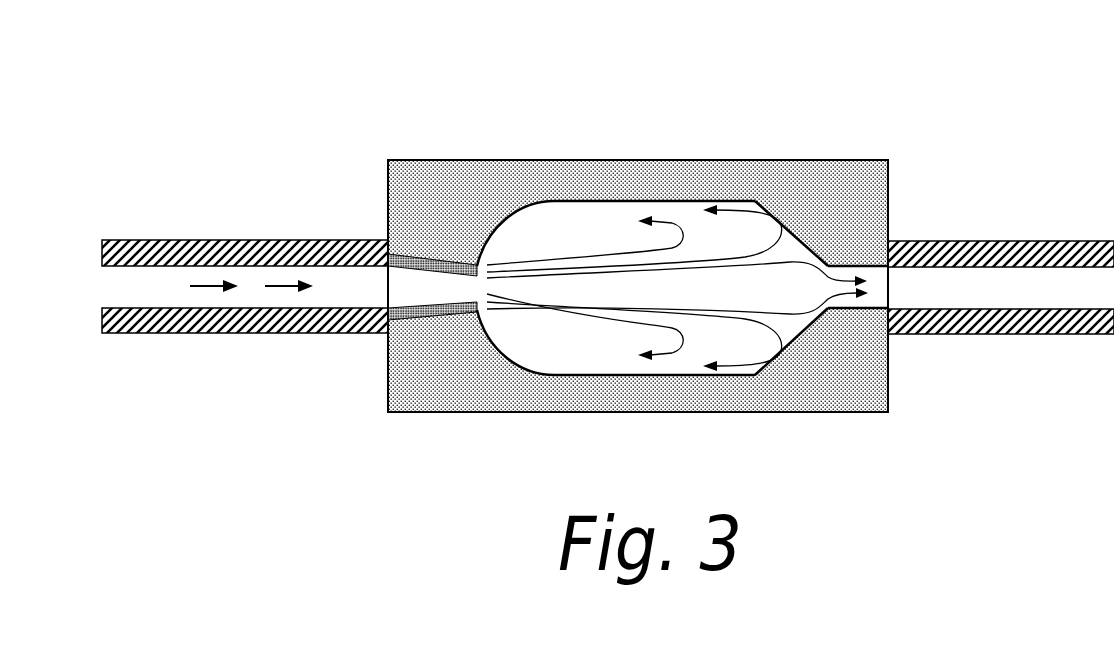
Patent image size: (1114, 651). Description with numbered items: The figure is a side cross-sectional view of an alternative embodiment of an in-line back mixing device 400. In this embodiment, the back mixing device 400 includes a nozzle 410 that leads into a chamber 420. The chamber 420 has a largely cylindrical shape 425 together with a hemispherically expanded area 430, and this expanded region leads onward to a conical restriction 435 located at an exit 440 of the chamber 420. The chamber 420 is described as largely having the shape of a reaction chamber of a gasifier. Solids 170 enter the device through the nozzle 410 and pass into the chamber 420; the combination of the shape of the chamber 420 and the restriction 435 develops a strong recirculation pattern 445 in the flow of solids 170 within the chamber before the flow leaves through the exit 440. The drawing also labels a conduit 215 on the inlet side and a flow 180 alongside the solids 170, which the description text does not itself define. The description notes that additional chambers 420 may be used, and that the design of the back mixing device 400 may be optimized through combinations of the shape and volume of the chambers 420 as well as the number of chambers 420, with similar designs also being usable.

The back mixing device 400 is at (442, 78).
The inlet conduit 215 is at (255, 240).
The solids 170 is at (198, 288).
The second fluid flow 180 is at (285, 288).
The nozzle 410 is at (428, 262).
The chamber 420 is at (697, 200).
The cylindrical shape 425 is at (515, 363).
The hemispherically expanded area 430 is at (523, 207).
The conical restriction 435 is at (780, 230).
The exit 440 is at (855, 264).
The recirculation pattern 445 is at (673, 352).